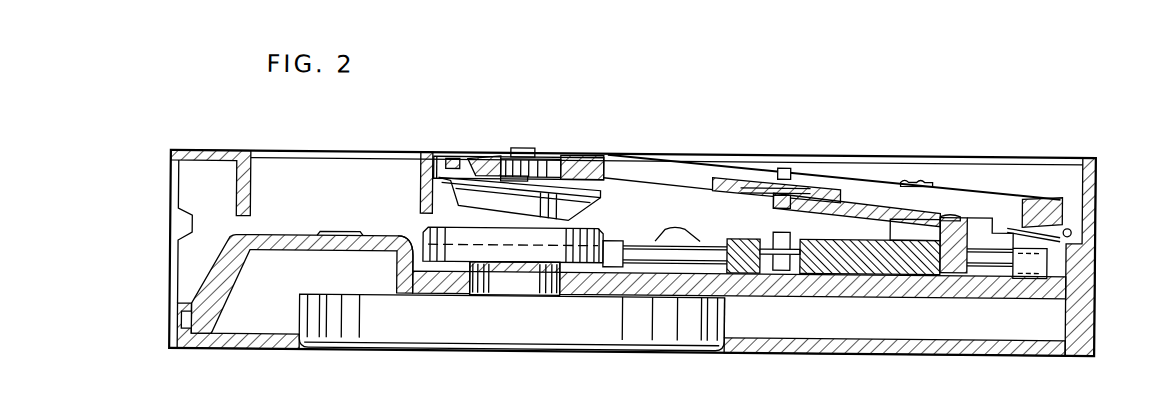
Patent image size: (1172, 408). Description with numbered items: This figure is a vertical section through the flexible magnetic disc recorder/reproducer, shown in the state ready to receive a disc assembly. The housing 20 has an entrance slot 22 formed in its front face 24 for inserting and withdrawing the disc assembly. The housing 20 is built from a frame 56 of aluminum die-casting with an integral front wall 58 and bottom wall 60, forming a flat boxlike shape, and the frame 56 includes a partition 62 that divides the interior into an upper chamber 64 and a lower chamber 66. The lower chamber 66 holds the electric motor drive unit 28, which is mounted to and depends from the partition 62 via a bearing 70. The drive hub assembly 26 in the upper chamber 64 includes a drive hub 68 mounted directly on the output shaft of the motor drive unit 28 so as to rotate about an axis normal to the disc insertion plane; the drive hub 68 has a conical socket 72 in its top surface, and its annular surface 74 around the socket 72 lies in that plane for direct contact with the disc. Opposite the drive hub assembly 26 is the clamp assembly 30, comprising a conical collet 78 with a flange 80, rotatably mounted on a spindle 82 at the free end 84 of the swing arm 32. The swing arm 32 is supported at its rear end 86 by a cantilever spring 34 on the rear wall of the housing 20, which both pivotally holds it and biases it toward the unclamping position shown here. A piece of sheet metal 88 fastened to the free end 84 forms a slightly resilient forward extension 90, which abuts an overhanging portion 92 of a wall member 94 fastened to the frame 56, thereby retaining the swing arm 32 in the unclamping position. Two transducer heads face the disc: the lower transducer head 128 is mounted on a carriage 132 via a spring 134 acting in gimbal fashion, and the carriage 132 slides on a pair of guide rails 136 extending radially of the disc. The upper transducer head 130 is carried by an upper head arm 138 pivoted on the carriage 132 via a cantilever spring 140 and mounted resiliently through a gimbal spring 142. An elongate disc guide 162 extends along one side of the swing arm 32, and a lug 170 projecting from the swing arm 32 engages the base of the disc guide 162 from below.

The housing 20 is at (1100, 194).
The entrance slot 22 is at (174, 227).
The front face 24 is at (171, 276).
The drive hub assembly 26 is at (608, 233).
The electric motor drive unit 28 is at (593, 336).
The clamp assembly 30 is at (450, 163).
The swing arm 32 is at (739, 160).
The cantilever spring 34 is at (1062, 243).
The frame 56 is at (1092, 293).
The front wall 58 is at (172, 161).
The bottom wall 60 is at (860, 348).
The partition 62 is at (952, 288).
The upper chamber 64 is at (1060, 159).
The lower chamber 66 is at (1042, 327).
The drive hub 68 is at (413, 249).
The bearing 70 is at (510, 287).
The conical socket 72 is at (577, 229).
The annular surface 74 is at (460, 233).
The conical collet 78 is at (436, 192).
The flange 80 is at (443, 155).
The spindle 82 is at (522, 151).
The free end 84 is at (497, 157).
The rear end 86 is at (1038, 195).
The piece of sheet metal 88 is at (557, 157).
The forward extension 90 is at (478, 157).
The overhanging portion 92 is at (438, 157).
The wall member 94 is at (250, 197).
The lower transducer head 128 is at (765, 228).
The upper transducer head 130 is at (798, 186).
The carriage 132 is at (878, 266).
The spring 134 is at (785, 250).
The guide rails 136 is at (1000, 268).
The upper head arm 138 is at (868, 198).
The cantilever spring 140 is at (930, 217).
The gimbal spring 142 is at (795, 186).
The disc guide 162 is at (680, 228).
The lug 170 is at (920, 180).